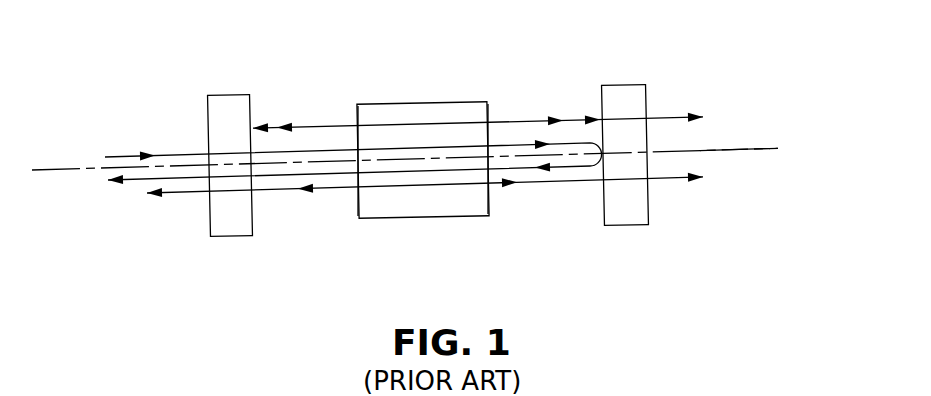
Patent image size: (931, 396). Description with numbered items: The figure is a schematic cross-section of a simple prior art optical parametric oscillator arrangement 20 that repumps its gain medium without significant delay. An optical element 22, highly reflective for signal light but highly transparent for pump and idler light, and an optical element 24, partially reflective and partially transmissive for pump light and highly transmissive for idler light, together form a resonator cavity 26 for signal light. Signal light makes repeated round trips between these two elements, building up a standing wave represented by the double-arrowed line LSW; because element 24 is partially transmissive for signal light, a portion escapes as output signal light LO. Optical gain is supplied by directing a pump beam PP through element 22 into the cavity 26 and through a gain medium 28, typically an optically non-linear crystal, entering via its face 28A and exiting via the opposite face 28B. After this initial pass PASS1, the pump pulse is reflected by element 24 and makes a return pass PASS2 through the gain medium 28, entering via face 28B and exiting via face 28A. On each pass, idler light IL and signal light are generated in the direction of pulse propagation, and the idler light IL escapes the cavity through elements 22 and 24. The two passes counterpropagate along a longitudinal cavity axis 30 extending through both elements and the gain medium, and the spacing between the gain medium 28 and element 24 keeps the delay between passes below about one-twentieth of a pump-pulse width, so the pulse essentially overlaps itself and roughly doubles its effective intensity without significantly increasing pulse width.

The OPO arrangement 20 is at (294, 267).
The optical element 22 is at (209, 107).
The optical element 24 is at (647, 100).
The resonator cavity 26 is at (317, 222).
The gain medium 28 is at (457, 113).
The face 28A is at (358, 118).
The opposite face 28B is at (490, 116).
The longitudinal cavity axis 30 is at (757, 149).
The standing wave LSW is at (310, 127).
The pump beam PP is at (127, 155).
The idler light IL is at (182, 195).
The output signal light LO is at (680, 118).
The initial pass PASS1 is at (402, 148).
The return pass PASS2 is at (410, 172).